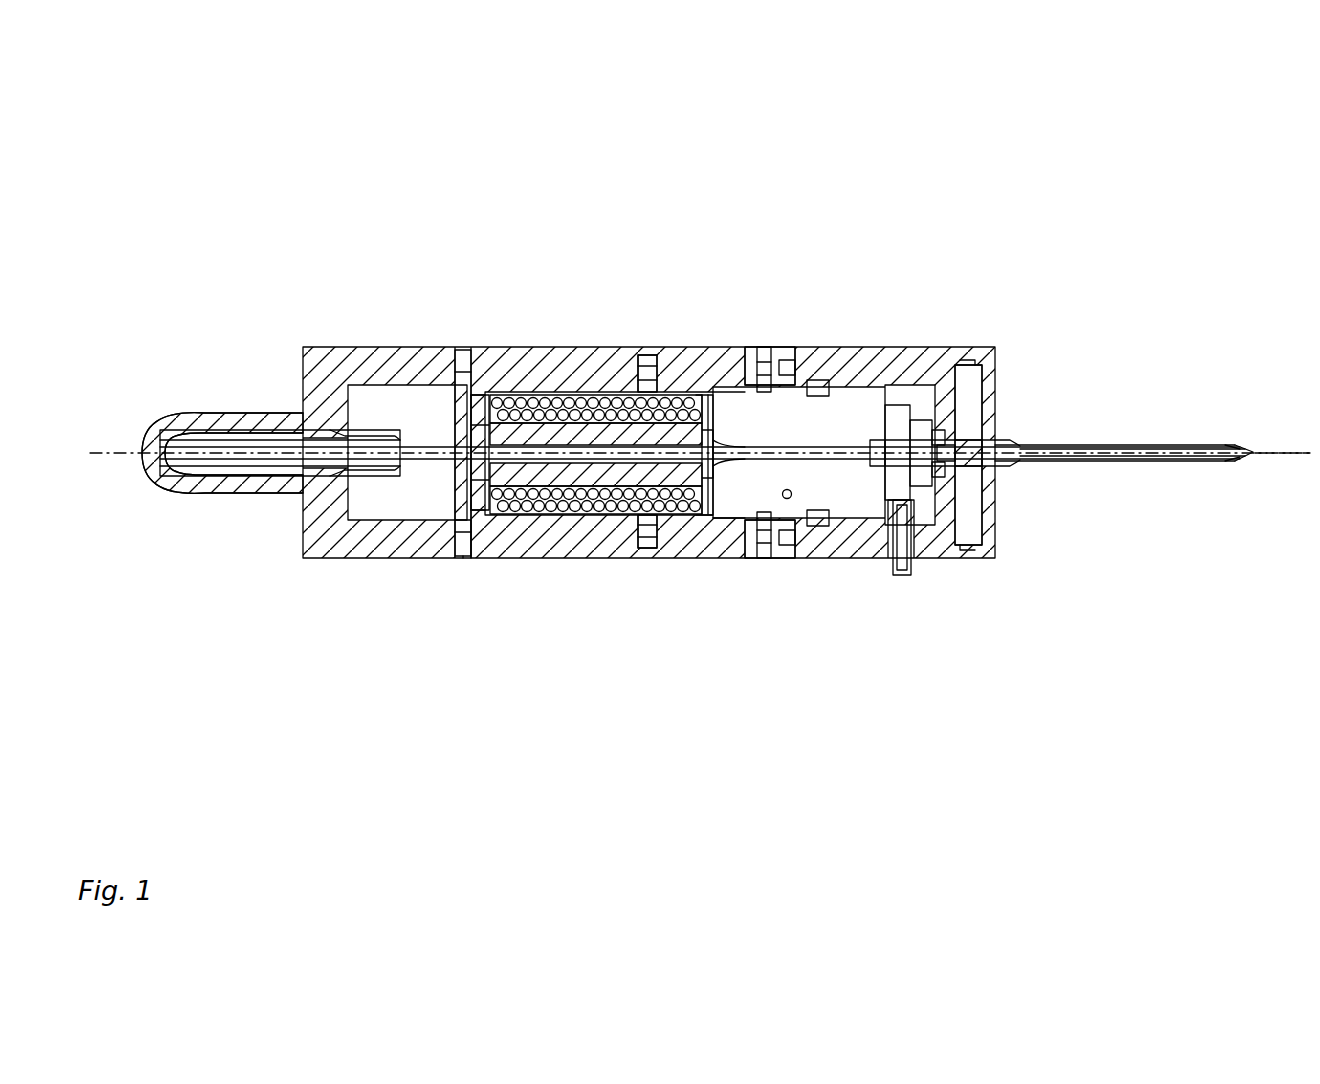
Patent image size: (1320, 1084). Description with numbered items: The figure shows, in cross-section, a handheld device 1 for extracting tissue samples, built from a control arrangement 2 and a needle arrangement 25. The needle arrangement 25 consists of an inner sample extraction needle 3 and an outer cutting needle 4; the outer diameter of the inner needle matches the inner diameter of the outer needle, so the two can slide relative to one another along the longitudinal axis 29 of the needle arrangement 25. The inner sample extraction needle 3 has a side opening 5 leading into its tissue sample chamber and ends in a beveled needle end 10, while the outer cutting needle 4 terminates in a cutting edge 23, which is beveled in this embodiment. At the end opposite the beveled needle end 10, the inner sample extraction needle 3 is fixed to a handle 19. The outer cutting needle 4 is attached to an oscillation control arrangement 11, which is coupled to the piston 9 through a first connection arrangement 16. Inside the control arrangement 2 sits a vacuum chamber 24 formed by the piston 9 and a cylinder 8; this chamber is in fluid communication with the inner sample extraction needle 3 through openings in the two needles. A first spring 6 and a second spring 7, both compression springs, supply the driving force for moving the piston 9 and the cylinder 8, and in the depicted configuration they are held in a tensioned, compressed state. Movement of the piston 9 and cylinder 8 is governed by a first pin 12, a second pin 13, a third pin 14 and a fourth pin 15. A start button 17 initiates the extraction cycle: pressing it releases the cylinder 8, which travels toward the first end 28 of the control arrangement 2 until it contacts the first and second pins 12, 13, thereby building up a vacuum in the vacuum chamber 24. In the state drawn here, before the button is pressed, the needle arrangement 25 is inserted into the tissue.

The handheld device 1 is at (262, 196).
The control arrangement 2 is at (395, 347).
The inner sample extraction needle 3 is at (1192, 460).
The outer cutting needle 4 is at (1025, 445).
The side opening 5 is at (1150, 461).
The first spring 6 is at (628, 347).
The second spring 7 is at (604, 548).
The cylinder 8 is at (705, 347).
The piston 9 is at (666, 512).
The beveled needle end 10 is at (1240, 446).
The oscillation control arrangement 11 is at (395, 470).
The first pin 12 is at (760, 347).
The second pin 13 is at (765, 558).
The third pin 14 is at (460, 347).
The fourth pin 15 is at (463, 558).
The first connection arrangement 16 is at (550, 347).
The start button 17 is at (900, 575).
The handle 19 is at (162, 430).
The cutting edge 23 is at (1222, 446).
The vacuum chamber 24 is at (675, 347).
The needle arrangement 25 is at (1070, 446).
The first end 28 is at (1122, 446).
The longitudinal axis 29 is at (1300, 455).